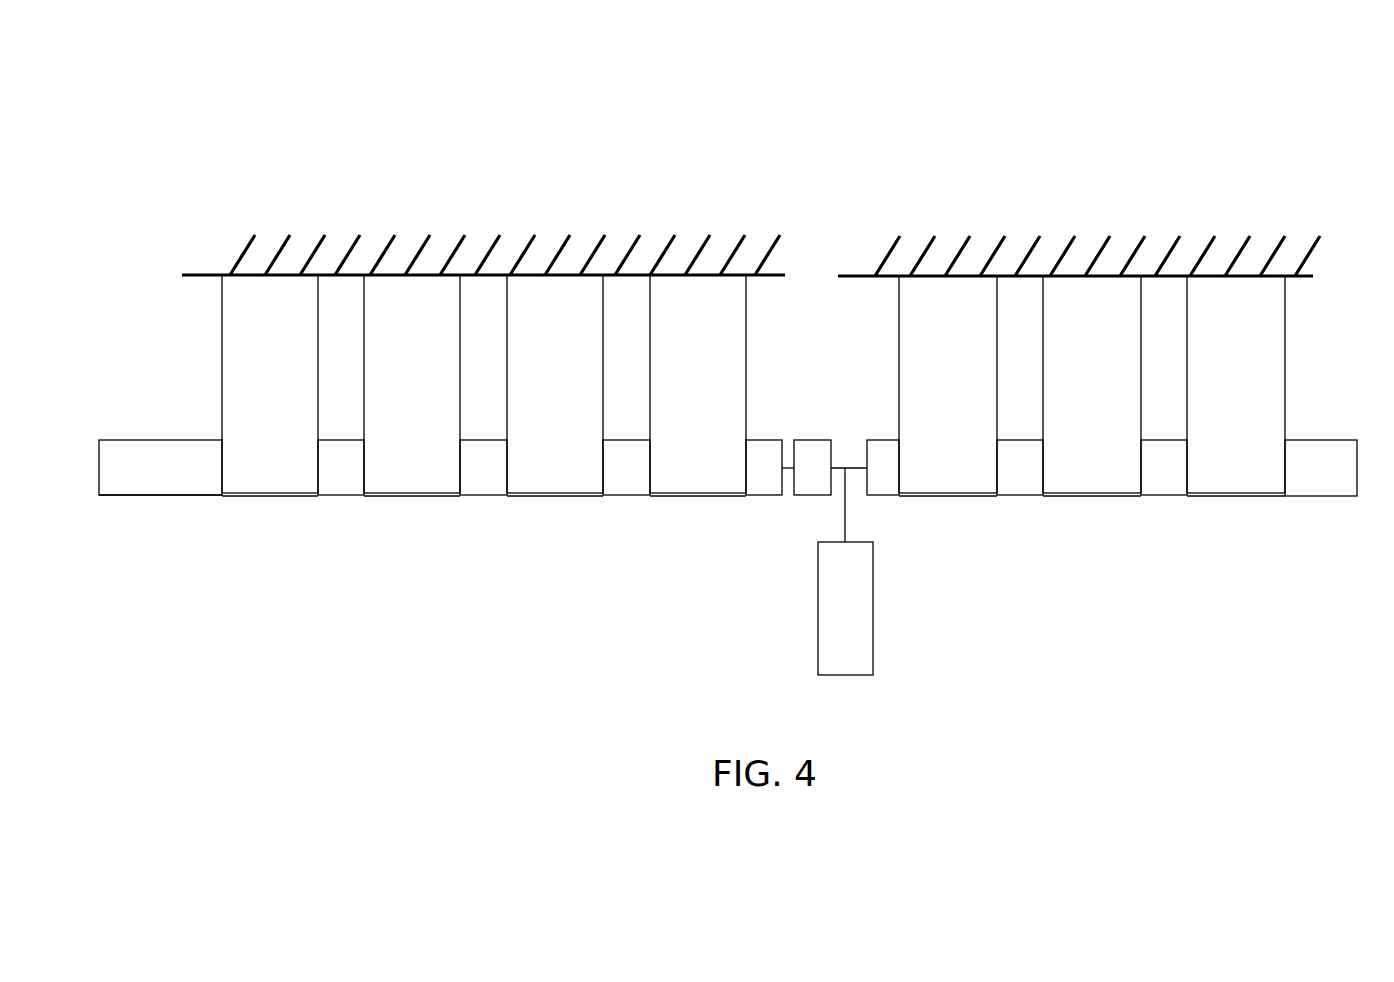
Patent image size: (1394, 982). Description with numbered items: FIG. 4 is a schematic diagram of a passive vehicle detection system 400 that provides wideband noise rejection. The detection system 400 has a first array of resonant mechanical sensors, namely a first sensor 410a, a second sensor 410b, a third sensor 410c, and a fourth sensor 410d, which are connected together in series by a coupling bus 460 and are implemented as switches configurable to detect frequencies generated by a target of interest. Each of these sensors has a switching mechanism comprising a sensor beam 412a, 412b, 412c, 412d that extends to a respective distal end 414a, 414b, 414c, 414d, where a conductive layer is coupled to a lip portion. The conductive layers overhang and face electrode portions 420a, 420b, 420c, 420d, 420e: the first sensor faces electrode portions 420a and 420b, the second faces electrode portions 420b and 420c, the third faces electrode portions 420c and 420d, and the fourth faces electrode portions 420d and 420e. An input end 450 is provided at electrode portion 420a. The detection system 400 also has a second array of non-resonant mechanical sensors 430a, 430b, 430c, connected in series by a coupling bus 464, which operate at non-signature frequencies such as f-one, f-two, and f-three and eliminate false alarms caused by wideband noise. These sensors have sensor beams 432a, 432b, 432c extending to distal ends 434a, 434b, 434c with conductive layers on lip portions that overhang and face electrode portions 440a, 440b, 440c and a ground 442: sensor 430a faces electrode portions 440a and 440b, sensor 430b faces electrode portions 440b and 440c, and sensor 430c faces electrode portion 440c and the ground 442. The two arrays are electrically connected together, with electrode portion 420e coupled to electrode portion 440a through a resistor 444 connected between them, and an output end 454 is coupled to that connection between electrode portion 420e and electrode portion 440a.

The passive vehicle detection system 400 is at (878, 150).
The coupling bus 460 is at (200, 273).
The coupling bus 464 is at (850, 275).
The first sensor 410a is at (222, 315).
The second sensor 410b is at (364, 319).
The third sensor 410c is at (507, 321).
The fourth sensor 410d is at (650, 323).
The sensor beam 412a is at (305, 410).
The sensor beam 412b is at (447, 410).
The sensor beam 412c is at (590, 410).
The sensor beam 412d is at (733, 410).
The distal end 414a is at (280, 497).
The distal end 414b is at (415, 497).
The distal end 414c is at (560, 497).
The distal end 414d is at (702, 497).
The electrode portion 420a is at (168, 495).
The electrode portion 420b is at (347, 495).
The electrode portion 420c is at (483, 495).
The electrode portion 420d is at (625, 495).
The electrode portion 420e is at (770, 495).
The non-resonant mechanical sensor 430a is at (899, 315).
The non-resonant mechanical sensor 430b is at (1043, 297).
The non-resonant mechanical sensor 430c is at (1286, 360).
The sensor beam 432a is at (983, 410).
The sensor beam 432b is at (1127, 410).
The sensor beam 432c is at (1270, 410).
The distal end 434a is at (955, 497).
The distal end 434b is at (1087, 497).
The distal end 434c is at (1222, 497).
The electrode portion 440a is at (890, 495).
The electrode portion 440b is at (1022, 495).
The electrode portion 440c is at (1158, 490).
The ground 442 is at (1313, 497).
The resistor 444 is at (813, 440).
The input end 450 is at (99, 472).
The output end 454 is at (873, 653).